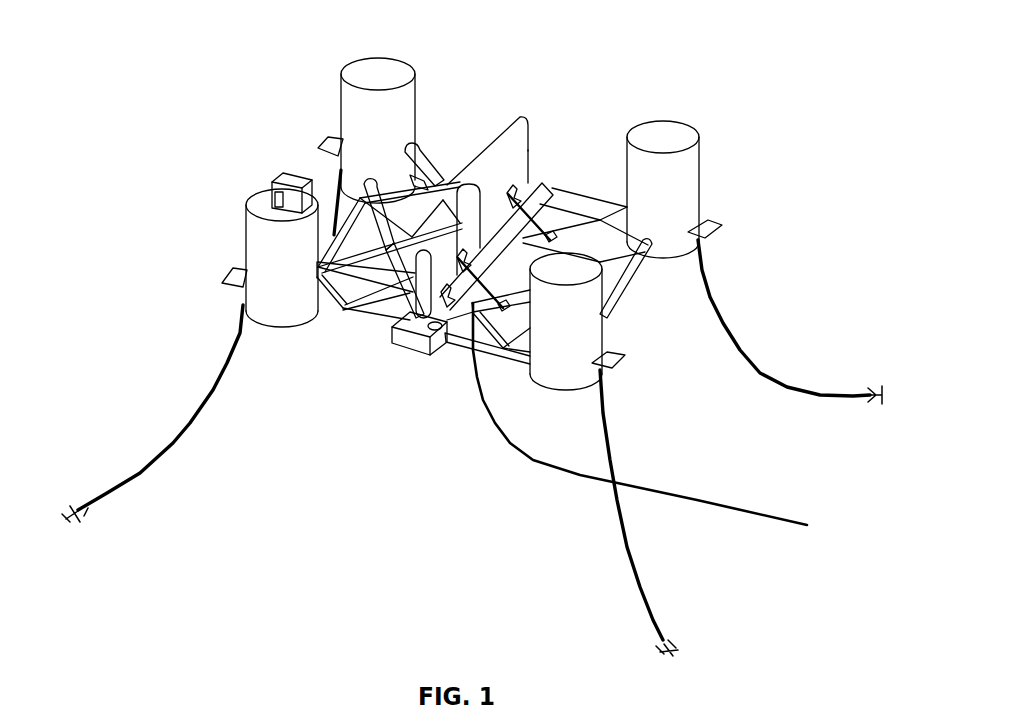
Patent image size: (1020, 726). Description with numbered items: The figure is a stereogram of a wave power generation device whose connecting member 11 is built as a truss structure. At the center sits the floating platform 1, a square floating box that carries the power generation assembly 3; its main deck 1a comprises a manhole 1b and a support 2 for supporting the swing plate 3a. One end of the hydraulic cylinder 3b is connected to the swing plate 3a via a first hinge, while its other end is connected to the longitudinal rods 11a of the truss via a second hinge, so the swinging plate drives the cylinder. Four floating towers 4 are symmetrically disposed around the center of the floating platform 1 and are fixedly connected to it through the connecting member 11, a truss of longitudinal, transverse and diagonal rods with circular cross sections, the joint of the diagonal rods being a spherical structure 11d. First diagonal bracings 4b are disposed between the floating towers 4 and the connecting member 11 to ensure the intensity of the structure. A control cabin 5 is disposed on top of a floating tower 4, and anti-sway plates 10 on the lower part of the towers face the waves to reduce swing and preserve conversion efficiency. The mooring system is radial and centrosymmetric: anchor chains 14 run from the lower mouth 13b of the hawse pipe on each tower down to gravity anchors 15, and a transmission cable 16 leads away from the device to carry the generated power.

The floating platform 1 is at (475, 317).
The main deck 1a is at (413, 322).
The manhole 1b is at (436, 328).
The support for supporting swing plate 2 is at (446, 324).
The power generation assembly 3 is at (528, 183).
The swing plate 3a is at (520, 152).
The hydraulic cylinder 3b is at (552, 238).
The floating tower 4 is at (430, 70).
The first diagonal bracing 4b is at (424, 160).
The control cabin 5 is at (266, 172).
The anti-sway plate 10 is at (707, 234).
The connecting member 11 is at (632, 300).
The longitudinal rod 11a is at (484, 347).
The spherical structure 11d is at (350, 200).
The lower mouth 13b is at (604, 372).
The anchor chain 14 is at (732, 326).
The gravity anchor 15 is at (675, 646).
The transmission cable 16 is at (700, 500).